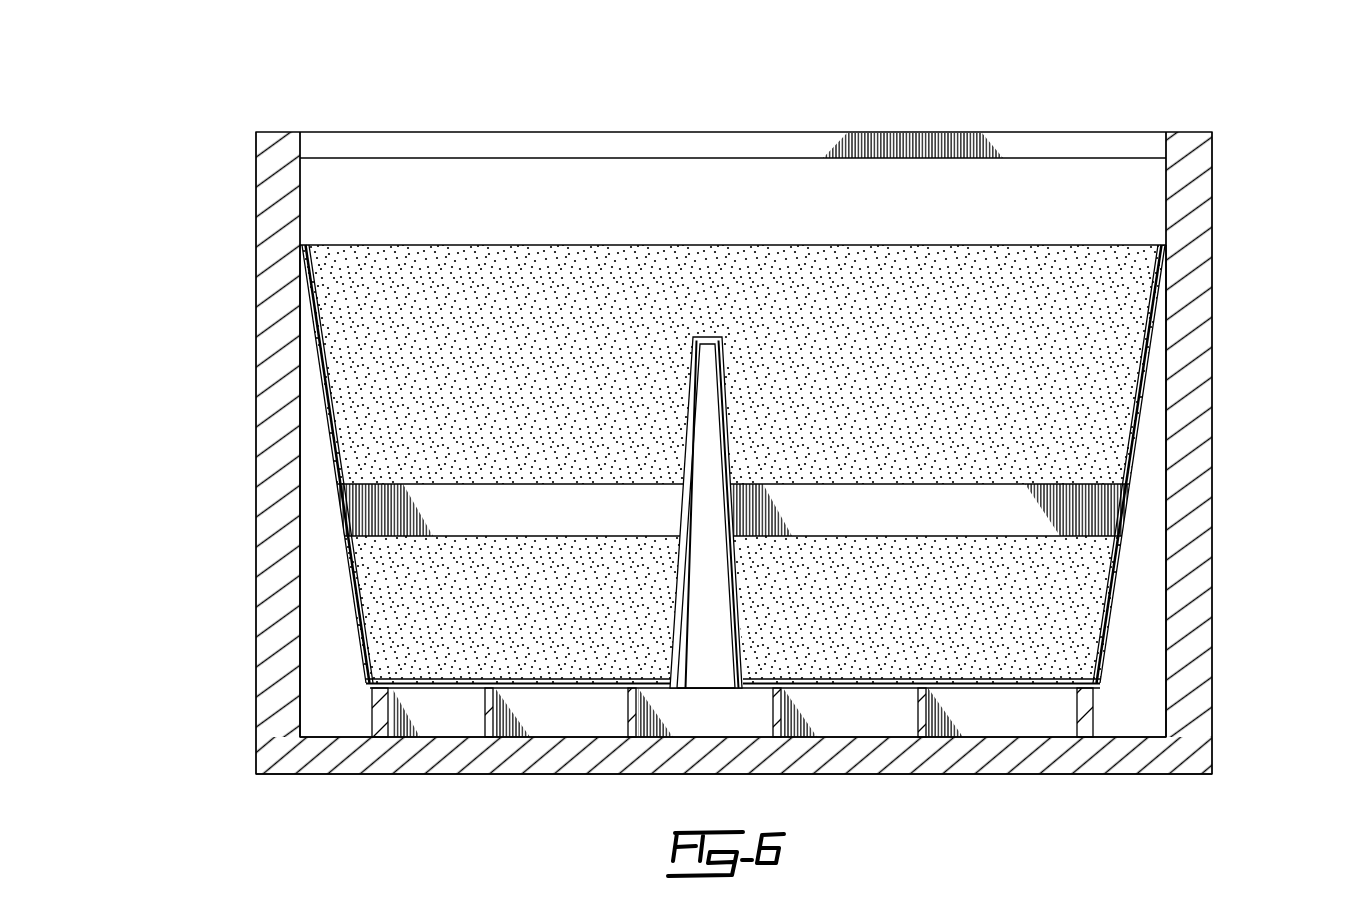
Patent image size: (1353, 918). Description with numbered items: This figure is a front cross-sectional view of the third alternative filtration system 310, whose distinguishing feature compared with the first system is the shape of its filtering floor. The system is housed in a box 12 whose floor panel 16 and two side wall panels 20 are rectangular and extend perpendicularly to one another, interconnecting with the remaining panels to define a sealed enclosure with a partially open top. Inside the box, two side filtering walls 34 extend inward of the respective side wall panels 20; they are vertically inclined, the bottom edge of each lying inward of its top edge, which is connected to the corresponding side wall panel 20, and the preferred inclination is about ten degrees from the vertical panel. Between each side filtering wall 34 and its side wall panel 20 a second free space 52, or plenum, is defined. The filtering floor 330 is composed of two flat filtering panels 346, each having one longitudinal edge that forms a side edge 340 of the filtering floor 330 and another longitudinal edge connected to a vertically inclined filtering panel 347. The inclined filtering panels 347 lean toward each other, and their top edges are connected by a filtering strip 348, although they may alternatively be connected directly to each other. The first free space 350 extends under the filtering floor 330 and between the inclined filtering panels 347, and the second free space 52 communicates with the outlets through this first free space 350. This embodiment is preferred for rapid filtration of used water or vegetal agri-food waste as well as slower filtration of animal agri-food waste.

The box 12 is at (252, 156).
The third alternative filtration system 310 is at (333, 114).
The side wall panel 20 is at (257, 502).
The floor panel 16 is at (545, 773).
The side filtering wall 34 is at (358, 652).
The second free space 52 is at (334, 704).
The vertically inclined filtering panel 347 is at (685, 428).
The filtering strip 348 is at (708, 337).
The first free space 350 is at (703, 648).
The side edge 340 is at (373, 688).
The flat filtering panel 346 is at (448, 688).
The filtering floor 330 is at (588, 698).